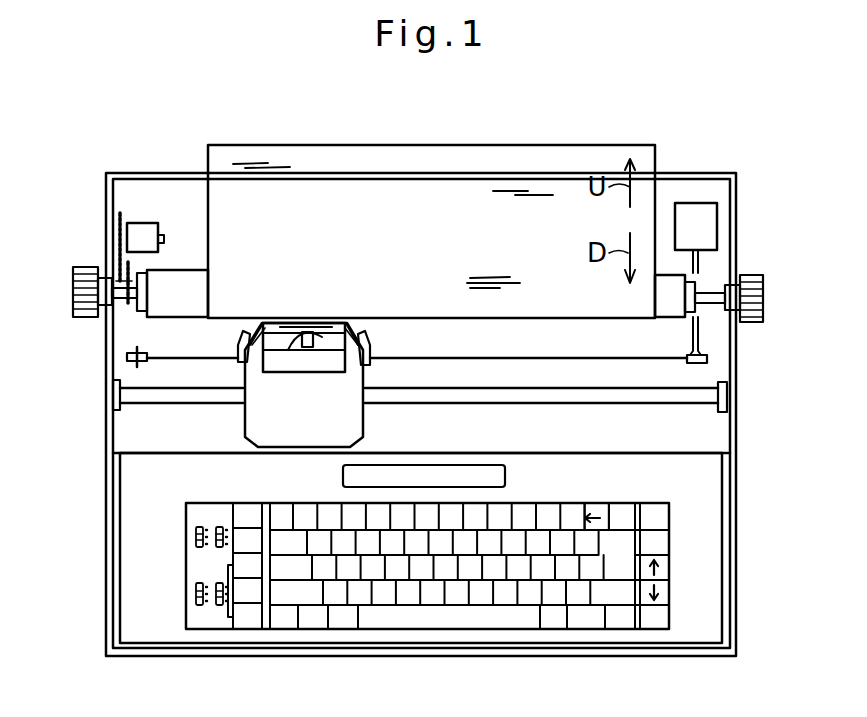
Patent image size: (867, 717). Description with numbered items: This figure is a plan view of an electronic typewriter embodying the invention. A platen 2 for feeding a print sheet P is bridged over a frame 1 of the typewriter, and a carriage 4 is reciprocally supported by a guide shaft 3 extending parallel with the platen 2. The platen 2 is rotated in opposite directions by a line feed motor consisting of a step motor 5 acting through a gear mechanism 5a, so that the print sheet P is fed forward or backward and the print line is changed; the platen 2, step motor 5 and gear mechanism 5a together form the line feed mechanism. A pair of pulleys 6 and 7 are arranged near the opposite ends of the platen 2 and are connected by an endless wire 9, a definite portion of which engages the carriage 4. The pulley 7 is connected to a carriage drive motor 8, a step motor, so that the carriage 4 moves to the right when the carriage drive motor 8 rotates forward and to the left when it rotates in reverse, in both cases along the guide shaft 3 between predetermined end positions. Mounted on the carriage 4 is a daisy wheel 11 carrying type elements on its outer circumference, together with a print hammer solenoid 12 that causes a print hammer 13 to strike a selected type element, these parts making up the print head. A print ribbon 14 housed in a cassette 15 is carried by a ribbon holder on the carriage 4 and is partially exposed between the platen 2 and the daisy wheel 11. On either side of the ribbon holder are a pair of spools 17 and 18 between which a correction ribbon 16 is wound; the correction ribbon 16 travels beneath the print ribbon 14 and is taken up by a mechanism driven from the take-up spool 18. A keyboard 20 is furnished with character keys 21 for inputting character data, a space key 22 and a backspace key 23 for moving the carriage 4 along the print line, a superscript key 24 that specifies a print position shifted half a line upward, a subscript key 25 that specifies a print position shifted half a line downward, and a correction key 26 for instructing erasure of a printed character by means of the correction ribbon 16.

The frame 1 is at (106, 503).
The platen 2 is at (188, 312).
The guide shaft 3 is at (518, 403).
The carriage 4 is at (245, 430).
The step motor 5 is at (140, 223).
The gear mechanism 5a is at (120, 228).
The pulley 6 is at (140, 352).
The pulley 7 is at (687, 357).
The carriage drive motor 8 is at (712, 222).
The endless wire 9 is at (515, 358).
The daisy wheel 11 is at (329, 323).
The print hammer solenoid 12 is at (302, 346).
The print hammer 13 is at (322, 337).
The print ribbon 14 is at (260, 323).
The cassette 15 is at (363, 428).
The correction ribbon 16 is at (363, 329).
The spool 17 is at (238, 357).
The take-up spool 18 is at (370, 356).
The keyboard 20 is at (713, 540).
The character keys 21 is at (470, 572).
The space key 22 is at (449, 582).
The backspace key 23 is at (598, 503).
The superscript key 24 is at (660, 573).
The subscript key 25 is at (660, 604).
The correction key 26 is at (560, 629).
The print sheet P is at (410, 147).